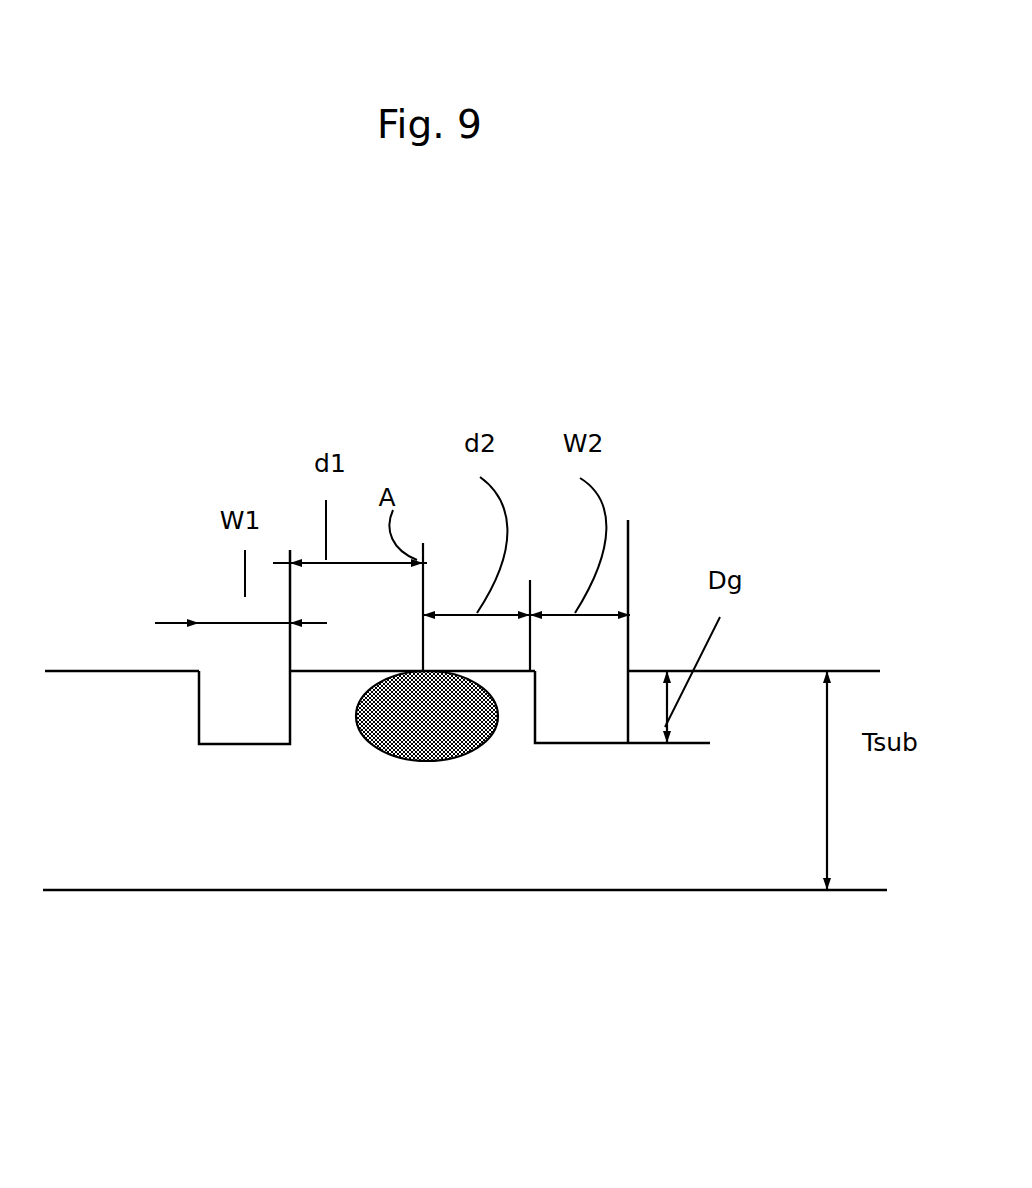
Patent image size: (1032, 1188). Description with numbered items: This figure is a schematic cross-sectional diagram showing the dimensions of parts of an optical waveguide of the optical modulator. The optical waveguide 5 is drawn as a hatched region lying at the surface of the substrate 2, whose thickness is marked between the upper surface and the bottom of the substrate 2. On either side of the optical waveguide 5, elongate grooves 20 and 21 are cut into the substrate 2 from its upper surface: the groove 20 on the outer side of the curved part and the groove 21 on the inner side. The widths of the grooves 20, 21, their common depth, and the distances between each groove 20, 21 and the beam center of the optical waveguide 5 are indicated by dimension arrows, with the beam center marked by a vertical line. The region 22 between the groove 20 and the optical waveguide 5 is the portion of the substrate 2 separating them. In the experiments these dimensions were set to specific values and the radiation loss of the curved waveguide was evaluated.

The substrate 2 is at (788, 706).
The buried region 5 is at (418, 782).
The groove 20 is at (289, 728).
The groove 21 is at (623, 680).
The mesa region between trenches 22 is at (337, 685).